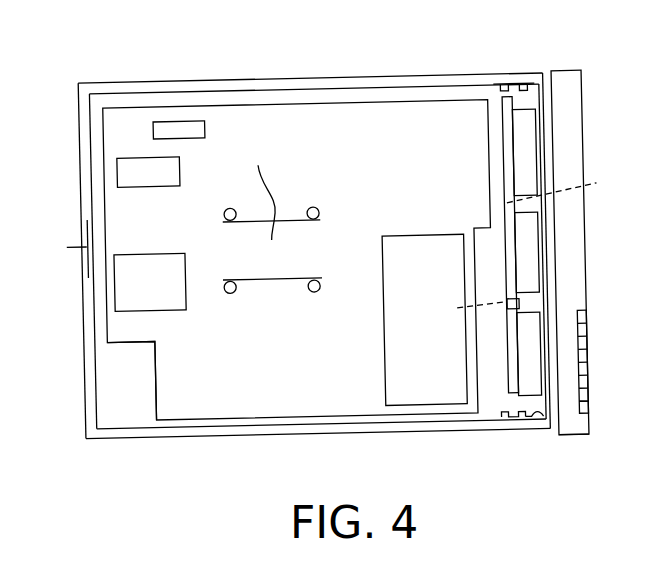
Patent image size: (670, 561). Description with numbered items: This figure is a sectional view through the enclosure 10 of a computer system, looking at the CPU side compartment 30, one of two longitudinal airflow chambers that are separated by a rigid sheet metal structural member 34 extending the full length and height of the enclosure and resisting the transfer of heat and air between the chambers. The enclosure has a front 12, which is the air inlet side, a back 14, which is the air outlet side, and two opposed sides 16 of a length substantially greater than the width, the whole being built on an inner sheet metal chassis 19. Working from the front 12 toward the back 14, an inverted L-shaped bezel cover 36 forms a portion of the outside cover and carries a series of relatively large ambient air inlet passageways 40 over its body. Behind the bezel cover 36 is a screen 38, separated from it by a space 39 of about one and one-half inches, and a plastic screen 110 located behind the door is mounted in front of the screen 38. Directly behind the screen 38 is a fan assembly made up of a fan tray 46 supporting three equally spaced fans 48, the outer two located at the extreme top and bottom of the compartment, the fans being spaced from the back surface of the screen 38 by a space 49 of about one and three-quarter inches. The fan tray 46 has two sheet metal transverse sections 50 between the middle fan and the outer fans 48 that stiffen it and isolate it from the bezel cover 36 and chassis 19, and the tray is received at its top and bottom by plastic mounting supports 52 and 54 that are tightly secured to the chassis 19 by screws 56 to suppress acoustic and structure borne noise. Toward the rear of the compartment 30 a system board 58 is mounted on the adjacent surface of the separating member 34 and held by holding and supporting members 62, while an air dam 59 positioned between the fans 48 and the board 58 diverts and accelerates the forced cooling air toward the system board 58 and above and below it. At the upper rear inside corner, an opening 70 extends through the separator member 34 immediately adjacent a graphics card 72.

The enclosure 10 is at (349, 73).
The front 12 is at (584, 227).
The back 14 is at (83, 317).
The side 16 is at (291, 430).
The chassis 19 is at (374, 434).
The CPU side compartment 30 is at (121, 208).
The structural member 34 is at (125, 401).
The bezel cover 36 is at (587, 343).
The screen 38 is at (553, 148).
The space 39 is at (575, 419).
The air inlet passageways 40 is at (583, 408).
The fan tray 46 is at (515, 394).
The fans 48 is at (530, 130).
The space 49 is at (547, 288).
The transverse sections 50 is at (524, 246).
The mounting support 52 is at (499, 88).
The mounting support 54 is at (526, 425).
The screws 56 is at (546, 433).
The system board 58 is at (265, 189).
The air dam 59 is at (415, 408).
The holding and supporting members 62 is at (229, 206).
The opening 70 is at (168, 127).
The graphics card 72 is at (132, 174).
The plastic screen 110 is at (572, 85).